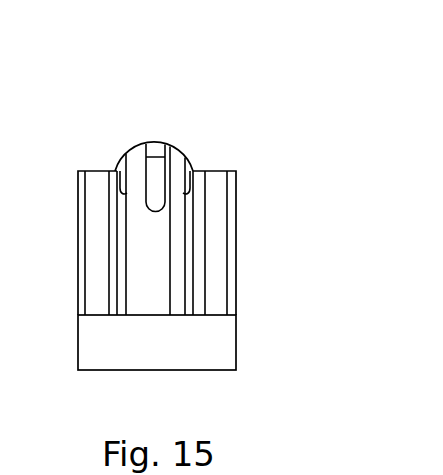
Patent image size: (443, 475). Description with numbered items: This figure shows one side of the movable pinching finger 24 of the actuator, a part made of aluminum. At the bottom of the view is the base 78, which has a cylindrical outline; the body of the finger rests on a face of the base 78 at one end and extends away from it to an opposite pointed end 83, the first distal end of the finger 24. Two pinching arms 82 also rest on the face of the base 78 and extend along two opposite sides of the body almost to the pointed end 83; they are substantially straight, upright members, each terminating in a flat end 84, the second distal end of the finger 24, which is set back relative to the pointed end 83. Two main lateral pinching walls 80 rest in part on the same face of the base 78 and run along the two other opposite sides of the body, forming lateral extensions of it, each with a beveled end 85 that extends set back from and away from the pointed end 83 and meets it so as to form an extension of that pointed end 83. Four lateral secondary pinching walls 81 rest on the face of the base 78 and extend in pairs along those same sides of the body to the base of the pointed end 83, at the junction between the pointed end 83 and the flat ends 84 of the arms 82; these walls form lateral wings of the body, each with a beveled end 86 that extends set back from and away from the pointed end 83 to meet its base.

The movable pinching finger 24 is at (276, 70).
The base 78 is at (227, 340).
The main lateral pinching walls 80 is at (157, 303).
The lateral secondary pinching walls 81 is at (122, 287).
The pinching arms 82 is at (80, 235).
The pointed end 83 is at (160, 154).
The flat end 84 is at (78, 171).
The beveled end 85 is at (166, 160).
The beveled end 86 is at (120, 171).